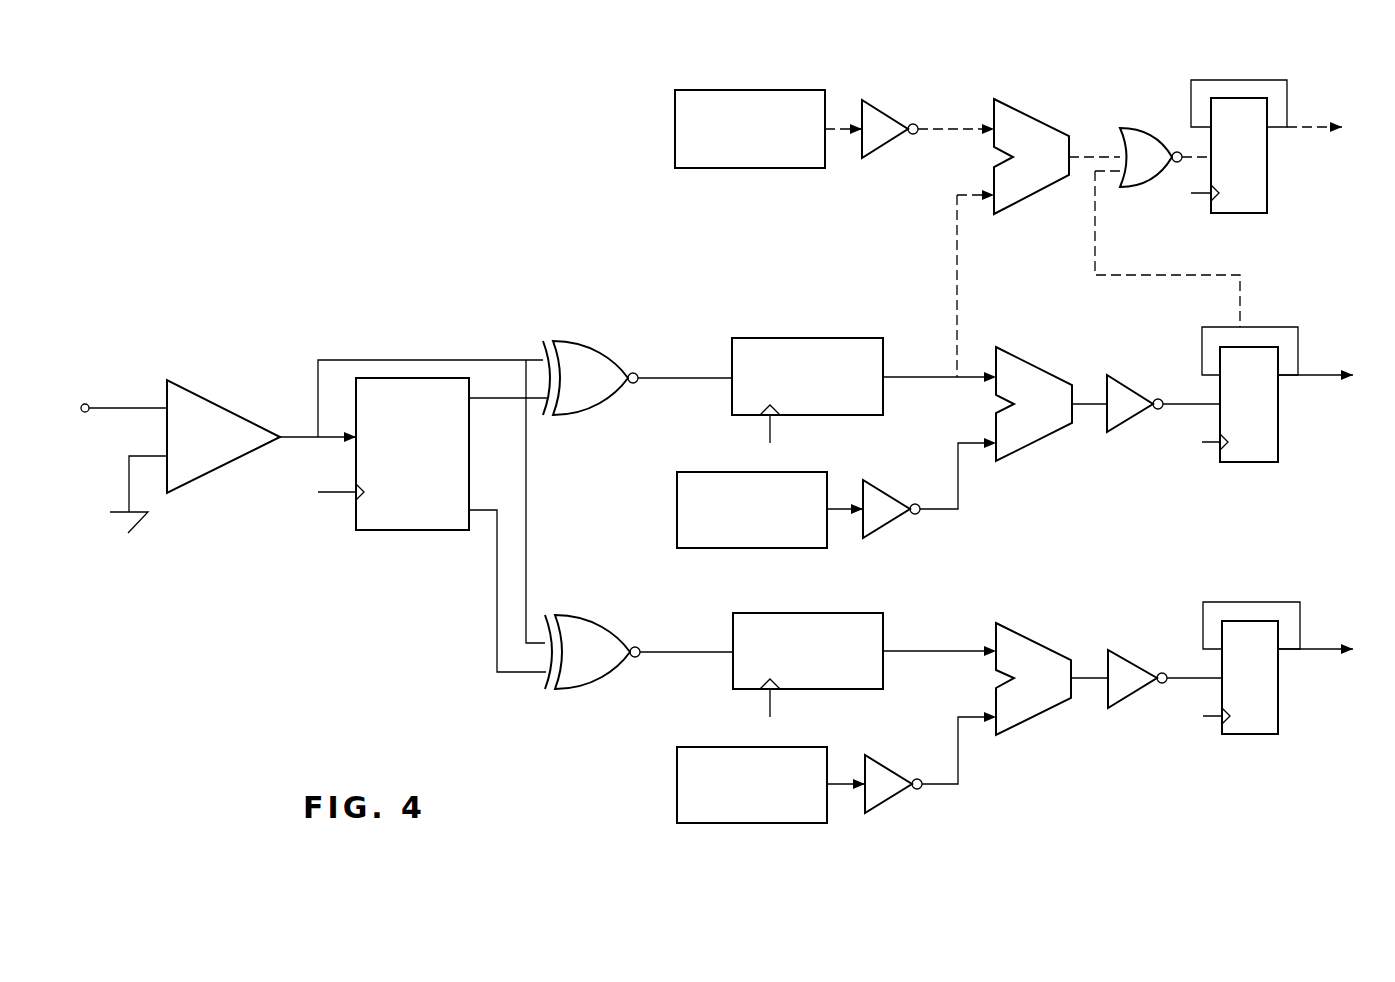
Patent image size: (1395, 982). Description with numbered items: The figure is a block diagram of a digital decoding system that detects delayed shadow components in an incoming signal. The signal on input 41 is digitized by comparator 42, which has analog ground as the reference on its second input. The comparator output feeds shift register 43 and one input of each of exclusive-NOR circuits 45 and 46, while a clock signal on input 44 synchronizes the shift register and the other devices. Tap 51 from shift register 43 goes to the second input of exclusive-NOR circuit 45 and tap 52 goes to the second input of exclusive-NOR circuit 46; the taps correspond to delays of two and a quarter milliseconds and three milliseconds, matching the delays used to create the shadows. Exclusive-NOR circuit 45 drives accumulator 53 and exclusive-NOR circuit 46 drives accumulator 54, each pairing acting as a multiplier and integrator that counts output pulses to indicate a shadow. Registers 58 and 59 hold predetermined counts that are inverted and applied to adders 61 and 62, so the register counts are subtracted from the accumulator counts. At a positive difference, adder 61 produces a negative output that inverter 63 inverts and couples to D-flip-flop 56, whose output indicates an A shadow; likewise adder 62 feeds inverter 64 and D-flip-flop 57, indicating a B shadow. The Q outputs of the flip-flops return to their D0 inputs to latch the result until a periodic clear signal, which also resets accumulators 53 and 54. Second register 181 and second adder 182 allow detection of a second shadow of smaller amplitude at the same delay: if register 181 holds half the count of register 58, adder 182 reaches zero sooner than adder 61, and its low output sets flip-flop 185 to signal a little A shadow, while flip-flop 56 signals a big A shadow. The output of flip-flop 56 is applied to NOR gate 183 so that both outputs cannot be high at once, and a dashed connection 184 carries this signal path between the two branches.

The input 41 is at (88, 404).
The comparator 42 is at (223, 403).
The shift register 43 is at (420, 533).
The clock signal input 44 is at (328, 492).
The exclusive-NOR circuit 45 is at (590, 341).
The exclusive-NOR circuit 46 is at (592, 689).
The tap 51 is at (497, 400).
The tap 52 is at (488, 508).
The accumulator 53 is at (808, 338).
The accumulator 54 is at (798, 613).
The D-flip-flop 56 is at (1258, 462).
The D-flip-flop 57 is at (1258, 734).
The register 58 is at (722, 472).
The register 59 is at (733, 747).
The adder 61 is at (1033, 445).
The adder 62 is at (1036, 640).
The inverter 63 is at (1127, 425).
The inverter 64 is at (1128, 658).
The second register 181 is at (807, 90).
The second adder 182 is at (1035, 200).
The NOR gate 183 is at (1157, 187).
The control signal line 184 is at (1243, 275).
The flip-flop 185 is at (1268, 194).